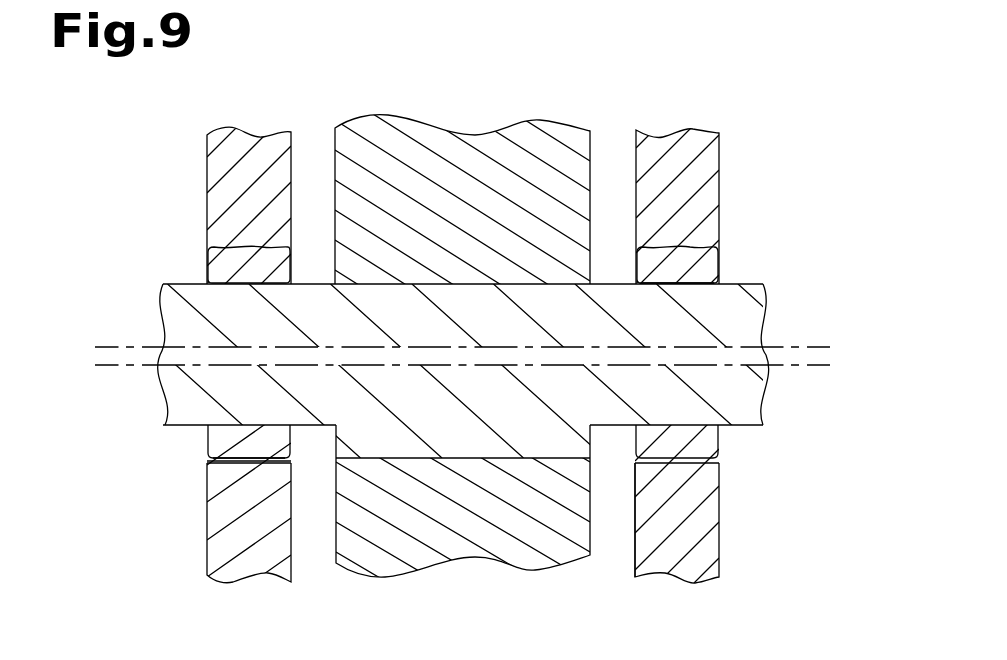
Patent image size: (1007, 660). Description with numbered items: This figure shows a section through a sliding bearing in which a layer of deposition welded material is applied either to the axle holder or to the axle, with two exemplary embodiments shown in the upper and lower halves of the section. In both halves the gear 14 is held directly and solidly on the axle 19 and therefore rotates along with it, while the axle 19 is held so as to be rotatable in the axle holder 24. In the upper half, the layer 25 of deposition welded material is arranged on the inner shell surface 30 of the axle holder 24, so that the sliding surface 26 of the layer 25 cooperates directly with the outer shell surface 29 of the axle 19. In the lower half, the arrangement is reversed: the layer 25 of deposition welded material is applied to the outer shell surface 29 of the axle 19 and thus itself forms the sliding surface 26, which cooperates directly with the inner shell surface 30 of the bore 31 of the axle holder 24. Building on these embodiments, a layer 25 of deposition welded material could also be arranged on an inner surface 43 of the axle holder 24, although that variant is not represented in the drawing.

The gear 14 is at (478, 152).
The axle 19 is at (730, 317).
The axle holder 24 is at (742, 252).
The layer 25 is at (226, 441).
The sliding surface 26 is at (237, 465).
The outer shell surface 29 is at (666, 281).
The inner shell surface 30 is at (263, 455).
The bore 31 is at (188, 460).
The inner surface 43 is at (632, 500).